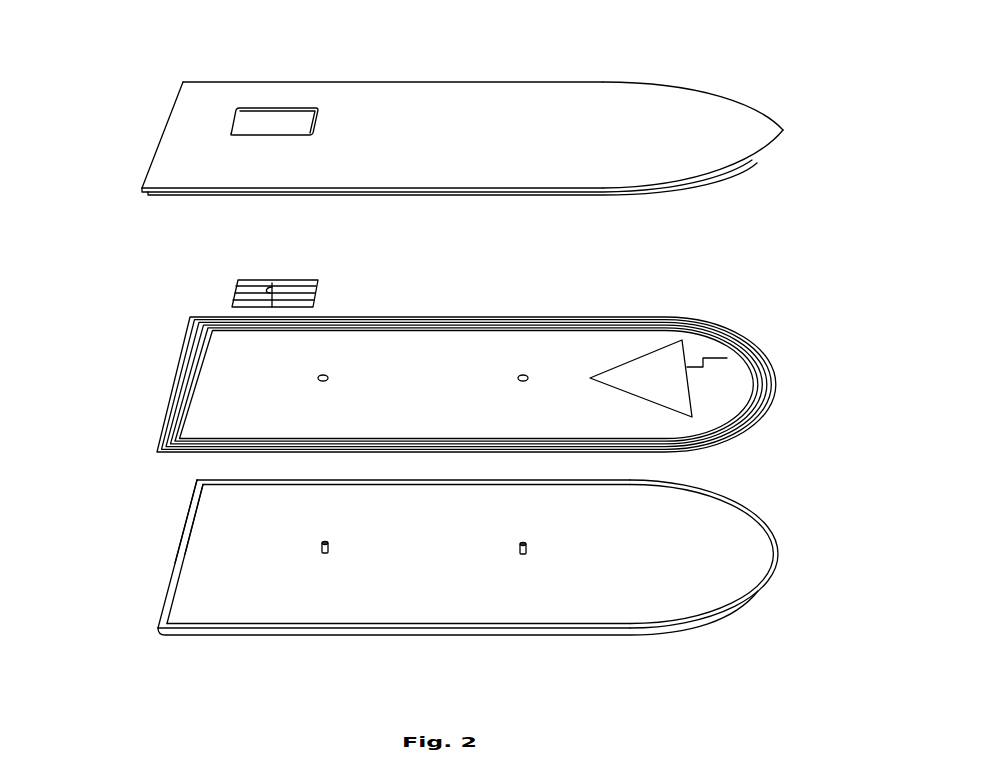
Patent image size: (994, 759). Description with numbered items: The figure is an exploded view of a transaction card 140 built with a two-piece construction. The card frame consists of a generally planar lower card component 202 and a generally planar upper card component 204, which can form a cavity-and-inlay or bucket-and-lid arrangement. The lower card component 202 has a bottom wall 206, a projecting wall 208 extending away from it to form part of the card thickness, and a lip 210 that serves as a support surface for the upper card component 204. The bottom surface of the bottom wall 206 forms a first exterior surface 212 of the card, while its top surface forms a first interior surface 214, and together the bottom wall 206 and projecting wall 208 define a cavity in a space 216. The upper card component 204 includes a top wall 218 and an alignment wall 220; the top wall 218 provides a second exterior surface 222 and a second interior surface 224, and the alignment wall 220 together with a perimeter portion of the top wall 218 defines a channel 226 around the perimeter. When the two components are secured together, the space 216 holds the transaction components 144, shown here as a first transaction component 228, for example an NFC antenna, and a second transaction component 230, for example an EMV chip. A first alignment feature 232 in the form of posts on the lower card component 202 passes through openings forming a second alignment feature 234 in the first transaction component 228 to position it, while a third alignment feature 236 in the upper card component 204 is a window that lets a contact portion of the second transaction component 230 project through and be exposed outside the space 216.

The transaction card 140 is at (95, 80).
The transaction component 144 is at (247, 262).
The lower card component 202 is at (695, 618).
The upper card component 204 is at (722, 171).
The bottom wall 206 is at (733, 567).
The projecting wall 208 is at (683, 490).
The lip 210 is at (184, 538).
The first exterior surface 212 is at (450, 636).
The first interior surface 214 is at (517, 610).
The space 216 is at (200, 589).
The top wall 218 is at (400, 93).
The alignment wall 220 is at (160, 193).
The second exterior surface 222 is at (513, 103).
The second interior surface 224 is at (600, 193).
The channel 226 is at (272, 191).
The first transaction component 228 is at (586, 343).
The second transaction component 230 is at (318, 280).
The first alignment feature 232 is at (519, 557).
The second alignment feature 234 is at (518, 381).
The third alignment feature 236 is at (274, 122).